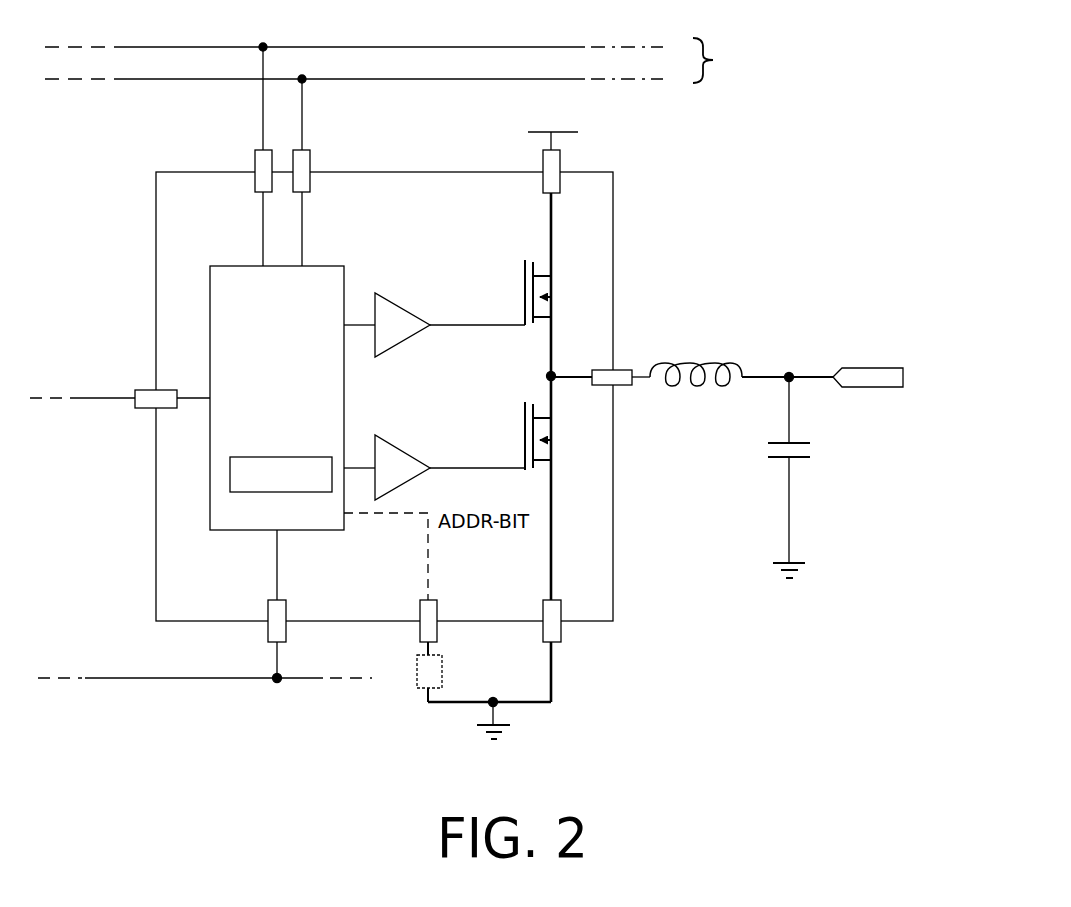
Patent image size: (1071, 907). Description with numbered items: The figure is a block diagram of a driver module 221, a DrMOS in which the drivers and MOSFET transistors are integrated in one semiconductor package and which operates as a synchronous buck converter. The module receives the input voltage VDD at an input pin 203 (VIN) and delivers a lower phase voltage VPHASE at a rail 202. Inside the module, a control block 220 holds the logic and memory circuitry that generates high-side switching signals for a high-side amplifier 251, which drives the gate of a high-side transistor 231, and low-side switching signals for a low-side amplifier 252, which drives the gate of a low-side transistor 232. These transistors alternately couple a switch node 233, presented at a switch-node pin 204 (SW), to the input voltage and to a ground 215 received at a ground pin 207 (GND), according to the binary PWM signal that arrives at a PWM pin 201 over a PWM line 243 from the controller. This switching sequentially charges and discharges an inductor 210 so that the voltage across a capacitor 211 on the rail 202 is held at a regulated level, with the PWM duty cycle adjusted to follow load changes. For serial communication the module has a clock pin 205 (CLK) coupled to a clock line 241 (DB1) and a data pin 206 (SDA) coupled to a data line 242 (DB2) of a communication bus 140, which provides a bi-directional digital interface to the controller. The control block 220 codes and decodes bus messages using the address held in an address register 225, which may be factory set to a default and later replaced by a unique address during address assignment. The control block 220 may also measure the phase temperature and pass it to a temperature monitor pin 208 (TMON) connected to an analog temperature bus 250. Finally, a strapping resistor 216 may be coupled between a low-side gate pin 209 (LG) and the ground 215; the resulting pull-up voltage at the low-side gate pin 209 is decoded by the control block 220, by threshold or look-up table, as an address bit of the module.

The communication bus 140 is at (414, 61).
The data line 242 is at (478, 46).
The clock line 241 is at (458, 80).
The driver module 221 is at (156, 181).
The control block 220 is at (344, 262).
The address register 225 is at (270, 456).
The clock pin 205 is at (255, 163).
The data pin 206 is at (310, 163).
The input pin 203 is at (562, 162).
The PWM line 243 is at (88, 397).
The PWM pin 201 is at (148, 390).
The high-side amplifier 251 is at (402, 298).
The low-side amplifier 252 is at (402, 446).
The high-side transistor 231 is at (511, 277).
The low-side transistor 232 is at (511, 428).
The switch node 233 is at (541, 376).
The switch-node pin 204 is at (624, 386).
The inductor 210 is at (699, 346).
The rail 202 is at (873, 367).
The capacitor 211 is at (821, 452).
The ground 215 is at (813, 568).
The temperature monitor pin 208 is at (268, 630).
The temperature bus 250 is at (178, 678).
The low-side gate pin 209 is at (440, 611).
The resistor 216 is at (446, 668).
The ground pin 207 is at (562, 628).